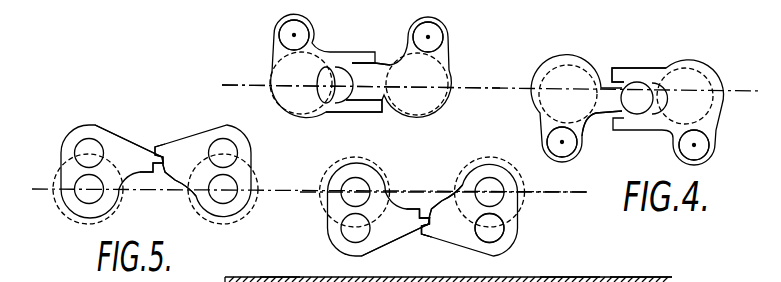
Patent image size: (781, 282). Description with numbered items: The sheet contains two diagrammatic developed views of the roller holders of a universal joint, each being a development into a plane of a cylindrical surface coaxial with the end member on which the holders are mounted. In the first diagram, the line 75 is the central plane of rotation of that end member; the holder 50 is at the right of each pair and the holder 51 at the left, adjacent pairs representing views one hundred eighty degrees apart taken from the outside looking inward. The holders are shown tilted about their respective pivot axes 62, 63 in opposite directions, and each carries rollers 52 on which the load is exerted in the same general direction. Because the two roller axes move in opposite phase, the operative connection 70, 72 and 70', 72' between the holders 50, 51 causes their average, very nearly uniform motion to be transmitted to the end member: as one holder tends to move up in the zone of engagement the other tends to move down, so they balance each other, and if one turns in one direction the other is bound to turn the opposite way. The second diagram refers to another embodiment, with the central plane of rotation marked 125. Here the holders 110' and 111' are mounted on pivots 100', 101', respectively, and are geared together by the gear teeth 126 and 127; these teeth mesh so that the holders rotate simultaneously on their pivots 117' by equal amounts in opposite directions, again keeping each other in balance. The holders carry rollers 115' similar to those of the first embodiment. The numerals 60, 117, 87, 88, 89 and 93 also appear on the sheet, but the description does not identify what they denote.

In FIG. 4, the holder 50 is at (450, 52).
In FIG. 4, the holder 51 is at (351, 72).
In FIG. 4, the rollers 52 is at (270, 73).
In FIG. 4, the pin hole 60 is at (292, 35).
In FIG. 4, the pivot axis 62 is at (427, 36).
In FIG. 4, the pivot axis 63 is at (296, 35).
In FIG. 4, the operative connection 70 is at (644, 118).
In FIG. 4, the operative connection 70' is at (357, 61).
In FIG. 4, the operative connection 72 is at (648, 60).
In FIG. 4, the operative connection 72' is at (354, 122).
In FIG. 4, the central plane of rotation 75 is at (467, 88).
In FIG. 5, the pivot 100' is at (231, 187).
In FIG. 5, the pivot 101' is at (357, 190).
In FIG. 5, the holder 110' is at (262, 188).
In FIG. 5, the holder 111' is at (309, 189).
In FIG. 5, the rollers 115' is at (290, 190).
In FIG. 5, the pivots 117' is at (290, 191).
In FIG. 5, the pin hole 117 is at (477, 247).
In FIG. 5, the central plane of rotation 125 is at (567, 193).
In FIG. 5, the gear teeth 126 is at (416, 213).
In FIG. 5, the gear teeth 127 is at (432, 206).
In FIG. 5, the scale graduation 87 is at (242, 277).
In FIG. 5, the scale graduation 88 is at (280, 277).
In FIG. 5, the scale 89 is at (570, 272).
In FIG. 5, the scale graduation 93 is at (635, 279).